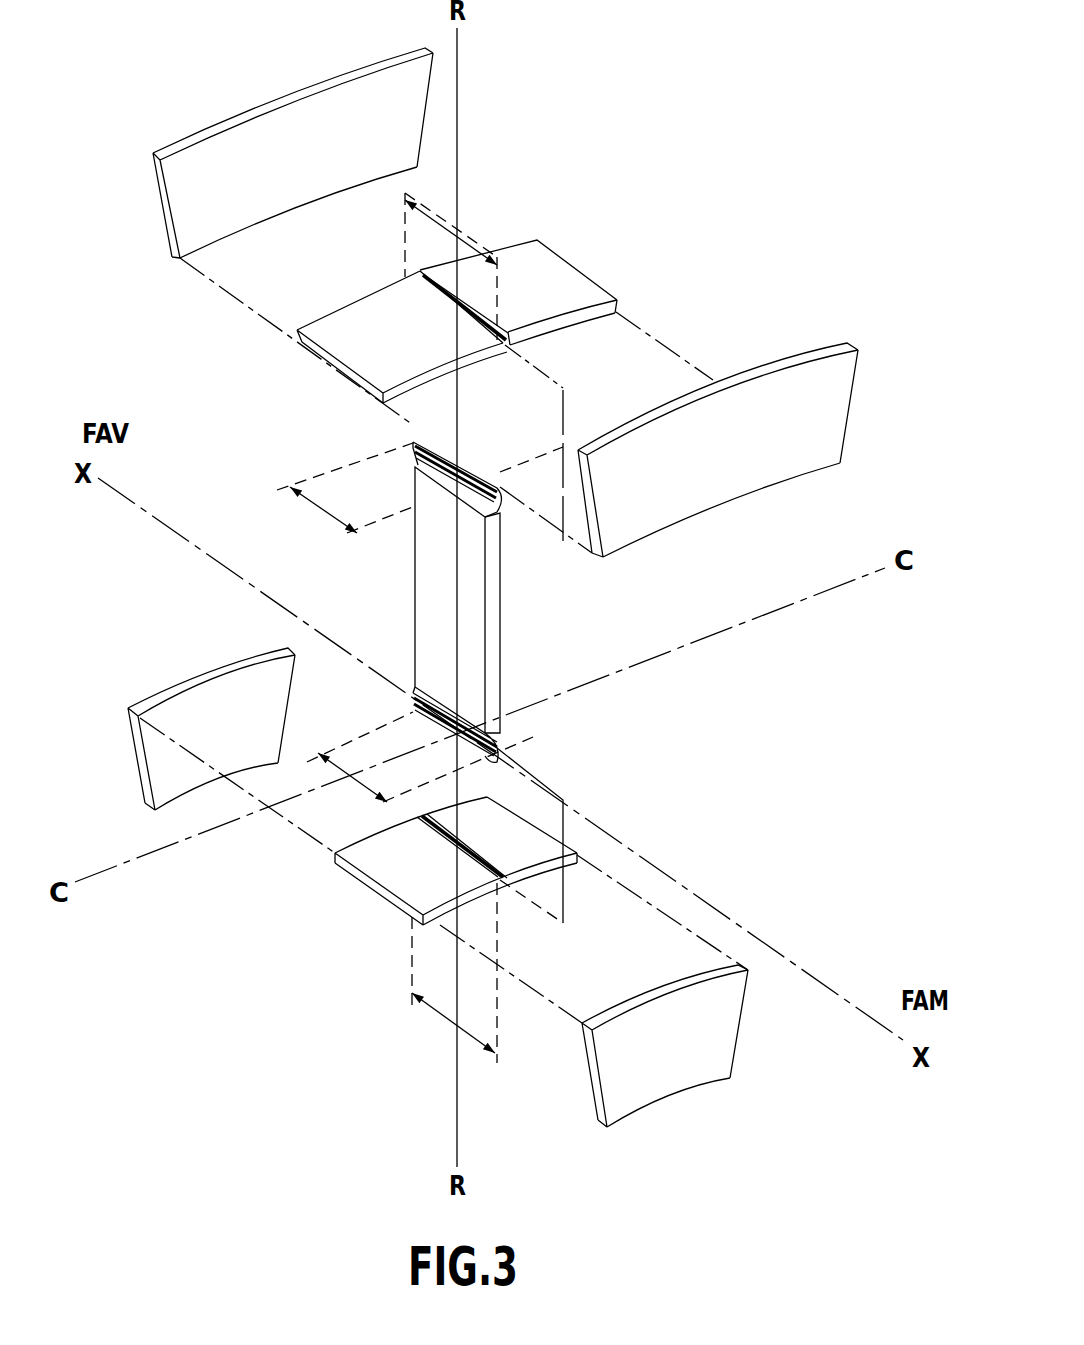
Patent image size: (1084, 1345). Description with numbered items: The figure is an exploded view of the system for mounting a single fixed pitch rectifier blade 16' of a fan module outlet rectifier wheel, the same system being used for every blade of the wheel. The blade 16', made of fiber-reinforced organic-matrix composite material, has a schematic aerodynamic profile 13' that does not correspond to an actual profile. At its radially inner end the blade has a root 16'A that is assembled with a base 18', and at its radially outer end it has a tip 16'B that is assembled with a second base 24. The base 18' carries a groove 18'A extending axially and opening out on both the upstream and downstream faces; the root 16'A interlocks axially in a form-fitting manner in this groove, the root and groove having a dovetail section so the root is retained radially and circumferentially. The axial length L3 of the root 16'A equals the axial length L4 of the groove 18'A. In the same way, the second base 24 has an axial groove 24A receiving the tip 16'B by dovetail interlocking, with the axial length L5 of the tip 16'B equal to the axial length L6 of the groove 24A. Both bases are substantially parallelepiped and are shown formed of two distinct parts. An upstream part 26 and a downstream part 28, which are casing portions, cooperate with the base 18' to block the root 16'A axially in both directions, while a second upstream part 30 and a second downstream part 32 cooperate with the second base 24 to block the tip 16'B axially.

The aerodynamic profile 13' is at (417, 600).
The blade 16' is at (485, 587).
The root 16'A is at (518, 724).
The tip 16'B is at (479, 464).
The base 18' is at (432, 871).
The groove 18'A is at (485, 883).
The second base 24 is at (553, 270).
The groove 24A is at (513, 343).
The upstream part 26 is at (667, 1075).
The downstream part 28 is at (138, 757).
The second upstream part 30 is at (732, 465).
The second downstream part 32 is at (150, 206).
The axial length of the root L3 is at (363, 778).
The axial length of the groove L4 is at (448, 1023).
The axial length of the tip L5 is at (320, 512).
The axial length of the groove L6 is at (448, 226).